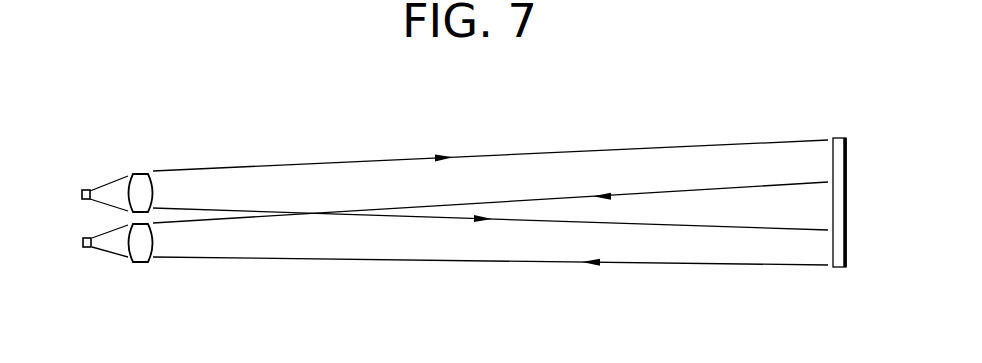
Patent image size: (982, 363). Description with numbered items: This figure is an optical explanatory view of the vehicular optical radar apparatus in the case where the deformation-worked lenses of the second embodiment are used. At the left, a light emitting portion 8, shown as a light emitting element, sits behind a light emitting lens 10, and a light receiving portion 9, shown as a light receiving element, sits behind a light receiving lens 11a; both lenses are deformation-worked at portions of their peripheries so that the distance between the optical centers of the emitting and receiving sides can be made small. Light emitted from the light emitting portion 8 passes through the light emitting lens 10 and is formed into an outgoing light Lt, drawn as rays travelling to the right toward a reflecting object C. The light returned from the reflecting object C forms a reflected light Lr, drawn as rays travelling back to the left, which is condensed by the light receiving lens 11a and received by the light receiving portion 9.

The light emitting portion 8 is at (83, 190).
The light receiving portion 9 is at (87, 248).
The light emitting lens 10 is at (139, 186).
The light receiving lens 11a is at (140, 262).
The outgoing light Lt is at (542, 222).
The reflected light Lr is at (648, 193).
The reflecting object C is at (840, 267).